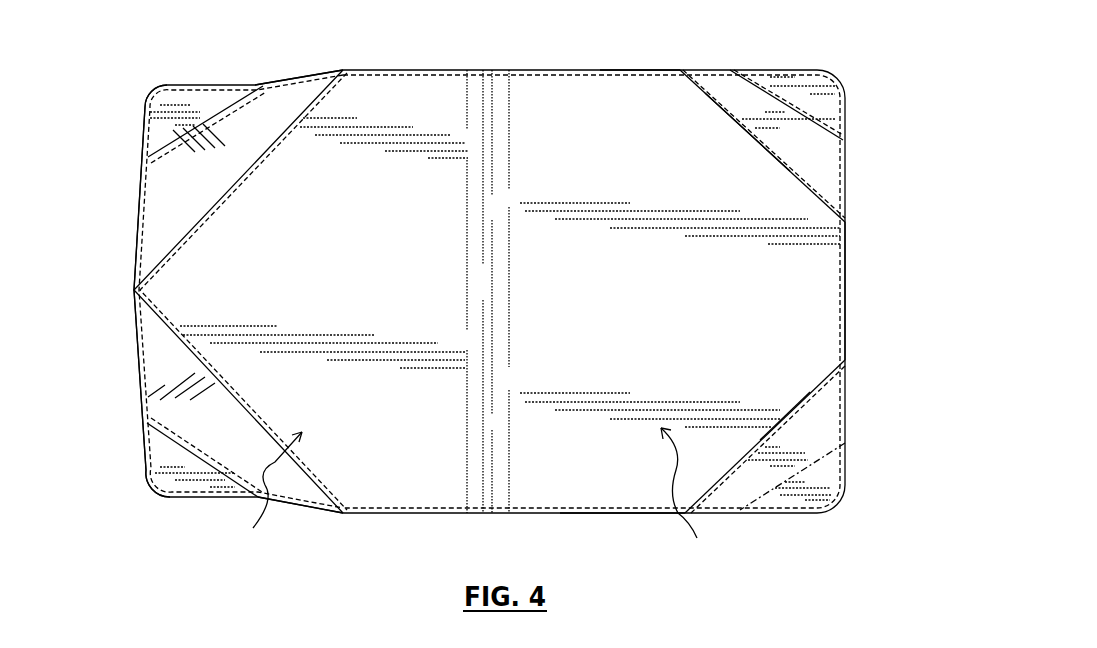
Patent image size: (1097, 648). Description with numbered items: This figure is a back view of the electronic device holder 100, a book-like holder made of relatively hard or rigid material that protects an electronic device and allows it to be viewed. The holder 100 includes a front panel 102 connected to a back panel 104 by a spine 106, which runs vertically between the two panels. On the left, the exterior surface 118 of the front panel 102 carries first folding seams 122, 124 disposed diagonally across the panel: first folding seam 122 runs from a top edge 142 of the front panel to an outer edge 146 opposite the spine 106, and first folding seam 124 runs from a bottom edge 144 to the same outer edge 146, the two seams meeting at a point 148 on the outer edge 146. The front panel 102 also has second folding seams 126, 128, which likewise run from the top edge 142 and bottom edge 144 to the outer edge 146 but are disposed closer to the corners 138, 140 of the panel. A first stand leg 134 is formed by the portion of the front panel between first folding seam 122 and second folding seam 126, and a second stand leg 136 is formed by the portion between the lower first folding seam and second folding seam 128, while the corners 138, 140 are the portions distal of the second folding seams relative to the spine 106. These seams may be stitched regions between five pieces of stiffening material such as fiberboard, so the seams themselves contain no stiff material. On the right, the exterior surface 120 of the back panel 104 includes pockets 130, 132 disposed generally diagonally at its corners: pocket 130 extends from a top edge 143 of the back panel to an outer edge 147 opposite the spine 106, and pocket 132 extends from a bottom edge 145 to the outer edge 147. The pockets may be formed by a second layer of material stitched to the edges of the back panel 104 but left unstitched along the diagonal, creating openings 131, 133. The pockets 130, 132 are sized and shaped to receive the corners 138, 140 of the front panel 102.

The electronic device holder 100 is at (414, 512).
The front panel 102 is at (240, 311).
The back panel 104 is at (753, 314).
The spine 106 is at (508, 118).
The exterior surface 118 is at (398, 95).
The exterior surface 120 is at (587, 448).
The first folding seam 122 is at (190, 233).
The first folding seam 124 is at (193, 362).
The second folding seam 126 is at (197, 125).
The second folding seam 128 is at (190, 457).
The pocket 130 is at (812, 133).
The opening 131 is at (757, 140).
The pocket 132 is at (808, 448).
The opening 133 is at (773, 418).
The first stand leg 134 is at (183, 167).
The second stand leg 136 is at (180, 400).
The corner 138 is at (168, 92).
The corner 140 is at (188, 478).
The top edge 142 is at (277, 80).
The top edge 143 is at (645, 70).
The bottom edge 144 is at (327, 515).
The bottom edge 145 is at (630, 515).
The outer edge 146 is at (137, 360).
The outer edge 147 is at (845, 318).
The point 148 is at (134, 292).